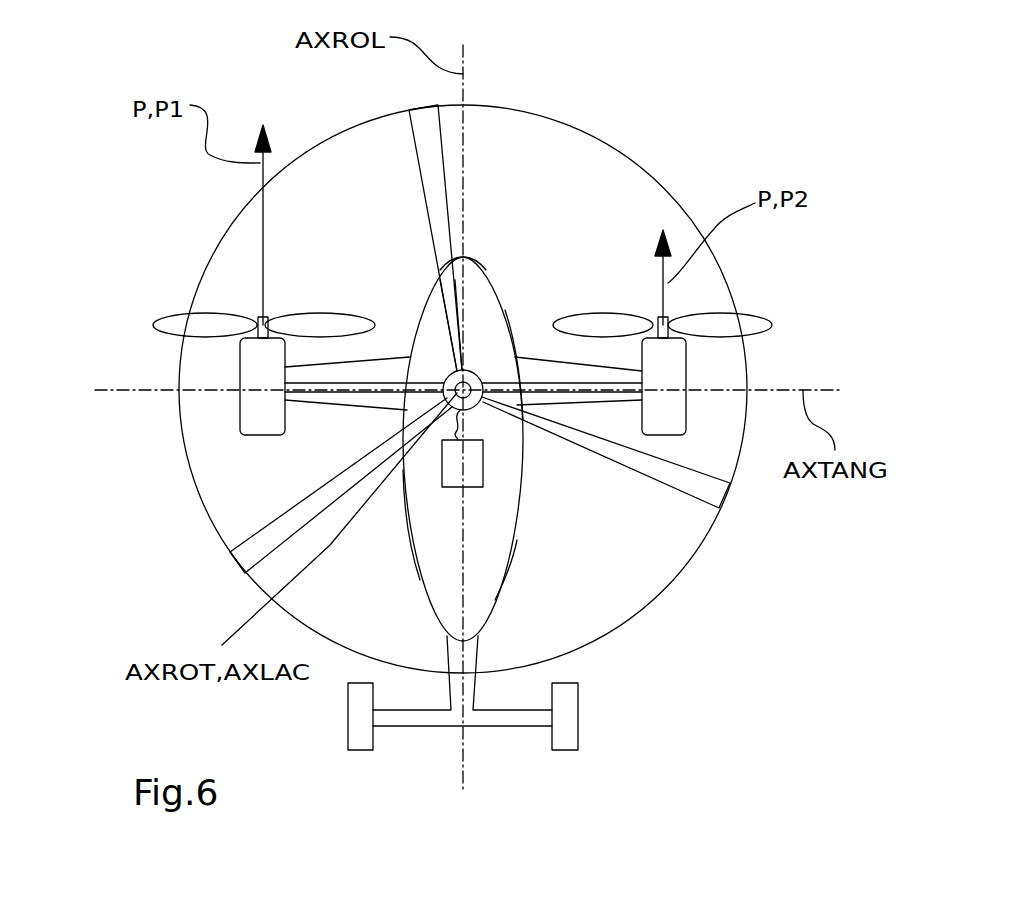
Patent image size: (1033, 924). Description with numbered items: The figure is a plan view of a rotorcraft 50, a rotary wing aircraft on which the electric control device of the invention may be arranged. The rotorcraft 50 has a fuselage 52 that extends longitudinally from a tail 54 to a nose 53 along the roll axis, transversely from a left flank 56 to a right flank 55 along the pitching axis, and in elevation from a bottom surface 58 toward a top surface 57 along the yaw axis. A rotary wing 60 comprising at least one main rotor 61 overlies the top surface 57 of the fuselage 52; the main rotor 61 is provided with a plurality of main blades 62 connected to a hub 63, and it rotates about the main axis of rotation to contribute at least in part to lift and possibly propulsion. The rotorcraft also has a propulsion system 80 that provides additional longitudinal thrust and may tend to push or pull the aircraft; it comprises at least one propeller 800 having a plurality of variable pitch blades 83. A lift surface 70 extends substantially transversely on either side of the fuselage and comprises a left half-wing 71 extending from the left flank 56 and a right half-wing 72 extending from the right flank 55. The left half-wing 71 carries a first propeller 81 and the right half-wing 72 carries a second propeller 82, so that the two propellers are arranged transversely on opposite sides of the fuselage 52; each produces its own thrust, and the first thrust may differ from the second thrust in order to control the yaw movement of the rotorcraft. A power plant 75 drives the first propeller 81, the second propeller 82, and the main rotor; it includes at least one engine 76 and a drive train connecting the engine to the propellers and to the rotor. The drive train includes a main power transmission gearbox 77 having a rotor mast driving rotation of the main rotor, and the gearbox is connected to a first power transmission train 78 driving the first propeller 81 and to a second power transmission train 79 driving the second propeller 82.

The rotorcraft 50 is at (675, 694).
The fuselage 52 is at (508, 560).
The nose 53 is at (473, 257).
The tail 54 is at (485, 727).
The right flank 55 is at (515, 538).
The left flank 56 is at (410, 558).
The top surface 57 is at (500, 357).
The bottom surface 58 is at (530, 303).
The rotary wing 60 is at (536, 389).
The main rotor 61 is at (752, 505).
The main blades 62 is at (686, 497).
The hub 63 is at (425, 402).
The lift surface 70 is at (475, 455).
The left half-wing 71 is at (320, 408).
The right half-wing 72 is at (568, 403).
The power plant 75 is at (502, 466).
The engine 76 is at (450, 488).
The main power transmission gearbox 77 is at (440, 335).
The first power transmission train 78 is at (393, 383).
The second power transmission train 79 is at (568, 383).
The propulsion system 80 is at (459, 317).
The first propeller 81 is at (433, 317).
The second propeller 82 is at (730, 357).
The variable pitch blades 83 is at (167, 316).
The propeller 800 is at (442, 285).